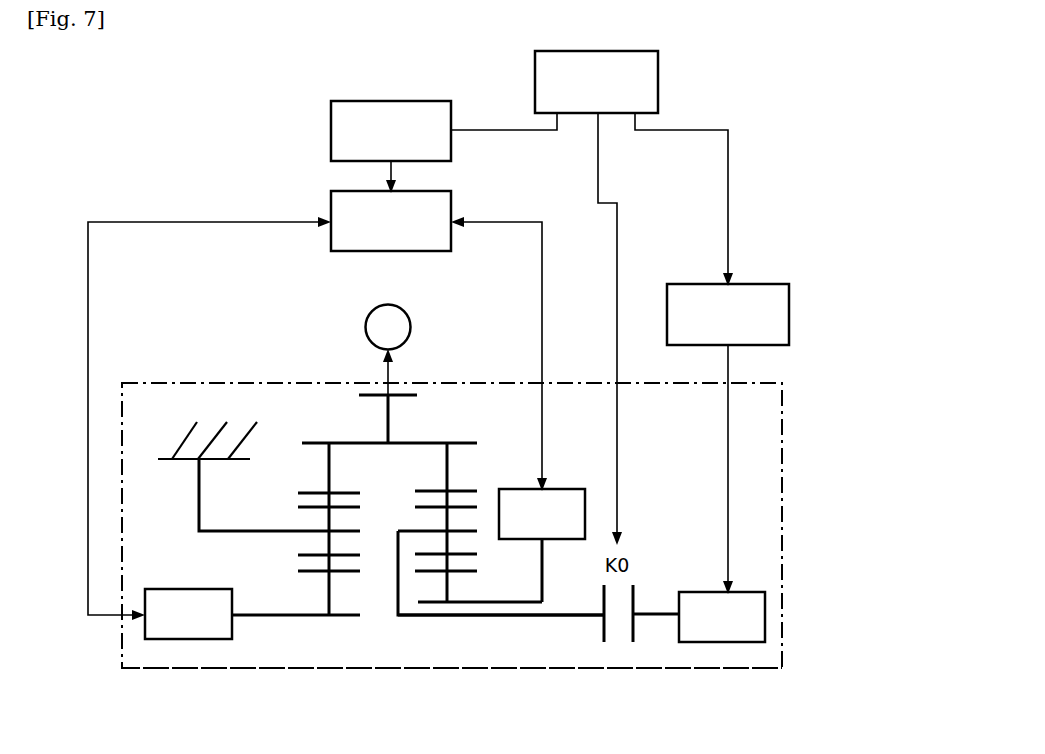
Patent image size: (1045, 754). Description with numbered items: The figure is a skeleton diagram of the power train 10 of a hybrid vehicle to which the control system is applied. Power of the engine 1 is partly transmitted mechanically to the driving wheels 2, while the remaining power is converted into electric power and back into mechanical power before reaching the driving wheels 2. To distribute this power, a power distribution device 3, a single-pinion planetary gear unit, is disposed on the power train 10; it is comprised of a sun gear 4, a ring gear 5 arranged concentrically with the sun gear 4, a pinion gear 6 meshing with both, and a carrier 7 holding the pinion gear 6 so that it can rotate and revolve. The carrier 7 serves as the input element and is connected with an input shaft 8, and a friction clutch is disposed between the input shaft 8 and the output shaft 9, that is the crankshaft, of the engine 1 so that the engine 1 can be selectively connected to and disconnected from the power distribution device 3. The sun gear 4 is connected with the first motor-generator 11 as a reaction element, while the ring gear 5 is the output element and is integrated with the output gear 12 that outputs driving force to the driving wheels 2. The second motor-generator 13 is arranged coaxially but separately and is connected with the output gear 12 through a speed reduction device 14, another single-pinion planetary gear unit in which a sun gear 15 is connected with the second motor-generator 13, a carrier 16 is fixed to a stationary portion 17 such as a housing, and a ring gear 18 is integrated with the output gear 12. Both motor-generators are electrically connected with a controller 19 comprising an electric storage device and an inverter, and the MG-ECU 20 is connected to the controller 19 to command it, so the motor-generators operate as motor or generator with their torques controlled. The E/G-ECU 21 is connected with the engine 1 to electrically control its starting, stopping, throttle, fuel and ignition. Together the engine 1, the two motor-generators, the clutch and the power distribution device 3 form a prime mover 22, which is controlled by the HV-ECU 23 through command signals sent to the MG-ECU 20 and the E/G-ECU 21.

The engine 1 is at (753, 590).
The driving wheels 2 is at (411, 327).
The power distribution device 3 is at (493, 457).
The sun gear 4 is at (463, 571).
The ring gear 5 is at (434, 488).
The pinion gear 6 is at (462, 554).
The carrier 7 is at (398, 530).
The input shaft 8 is at (552, 615).
The output shaft 9 is at (662, 611).
The power train 10 is at (338, 648).
The first motor-generator 11 is at (562, 488).
The output gear 12 is at (403, 395).
The second motor-generator 13 is at (186, 588).
The speed reduction device 14 is at (290, 590).
The sun gear 15 is at (350, 571).
The carrier 16 is at (243, 527).
The stationary portion 17 is at (199, 437).
The ring gear 18 is at (307, 492).
The controller 19 is at (451, 196).
The MG-ECU 20 is at (418, 100).
The E/G-ECU 21 is at (775, 284).
The prime mover 22 is at (782, 452).
The HV-ECU 23 is at (658, 77).